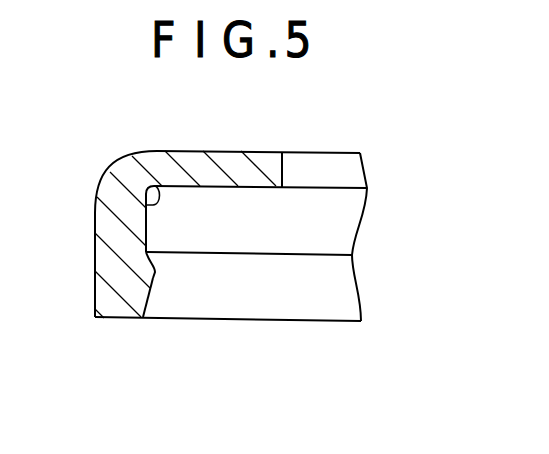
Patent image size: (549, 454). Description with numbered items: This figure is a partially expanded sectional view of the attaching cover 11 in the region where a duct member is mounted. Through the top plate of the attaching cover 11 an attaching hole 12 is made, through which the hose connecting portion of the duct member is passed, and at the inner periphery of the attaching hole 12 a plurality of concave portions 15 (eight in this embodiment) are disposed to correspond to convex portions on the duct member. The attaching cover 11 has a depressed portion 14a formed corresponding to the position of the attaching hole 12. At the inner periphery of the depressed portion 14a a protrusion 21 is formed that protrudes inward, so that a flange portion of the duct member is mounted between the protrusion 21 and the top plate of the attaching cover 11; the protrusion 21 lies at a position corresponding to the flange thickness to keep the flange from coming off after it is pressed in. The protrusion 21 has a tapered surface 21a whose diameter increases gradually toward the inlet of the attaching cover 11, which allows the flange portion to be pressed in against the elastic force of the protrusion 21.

The attaching cover 11 is at (239, 149).
The attaching hole 12 is at (332, 168).
The depressed portion 14a is at (123, 164).
The concave portion 15 is at (285, 163).
The protrusion 21 is at (155, 268).
The tapered surface 21a is at (150, 288).